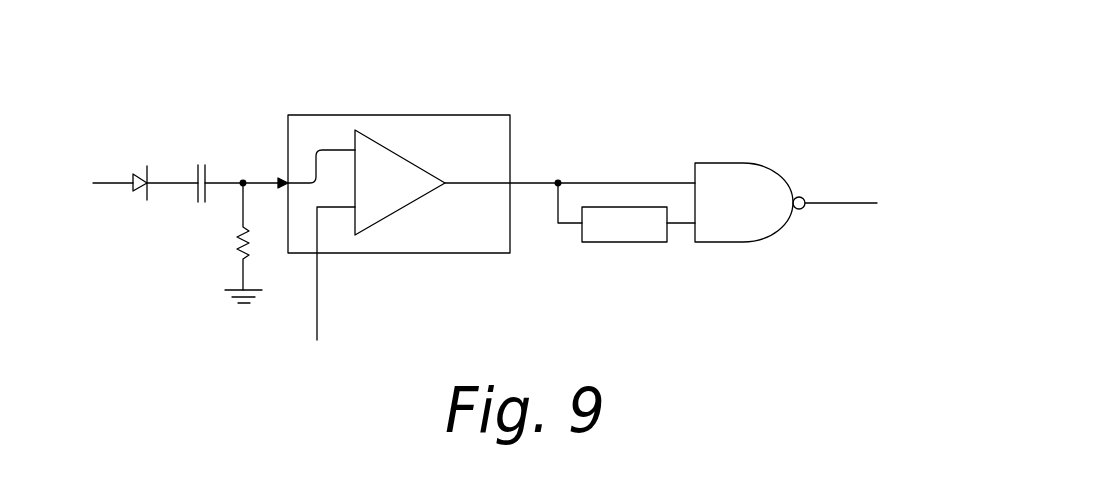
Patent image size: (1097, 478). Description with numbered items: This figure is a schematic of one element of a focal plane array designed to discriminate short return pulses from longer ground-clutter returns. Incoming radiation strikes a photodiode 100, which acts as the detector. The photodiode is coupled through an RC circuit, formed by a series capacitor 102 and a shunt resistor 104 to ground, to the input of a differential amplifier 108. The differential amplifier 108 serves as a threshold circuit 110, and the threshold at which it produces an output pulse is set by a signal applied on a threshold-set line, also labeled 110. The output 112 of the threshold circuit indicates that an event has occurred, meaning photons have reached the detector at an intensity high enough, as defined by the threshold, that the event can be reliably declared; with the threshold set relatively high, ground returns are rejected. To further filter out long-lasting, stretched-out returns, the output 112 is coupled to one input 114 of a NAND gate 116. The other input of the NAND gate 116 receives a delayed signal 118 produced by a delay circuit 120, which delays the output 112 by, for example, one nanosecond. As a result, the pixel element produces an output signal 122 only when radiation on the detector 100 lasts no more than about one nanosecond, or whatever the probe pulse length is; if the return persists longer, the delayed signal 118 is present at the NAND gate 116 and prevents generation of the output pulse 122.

The photodiode 100 is at (131, 192).
The RC circuit capacitor 102 is at (198, 170).
The RC circuit resistor 104 is at (238, 228).
The differential amplifier 108 is at (413, 161).
The threshold circuit 110 is at (377, 115).
The output 112 is at (528, 183).
The NAND gate input 114 is at (690, 183).
The NAND gate 116 is at (730, 163).
The delayed signal 118 is at (686, 224).
The delay circuit 120 is at (626, 243).
The output signal 122 is at (820, 203).